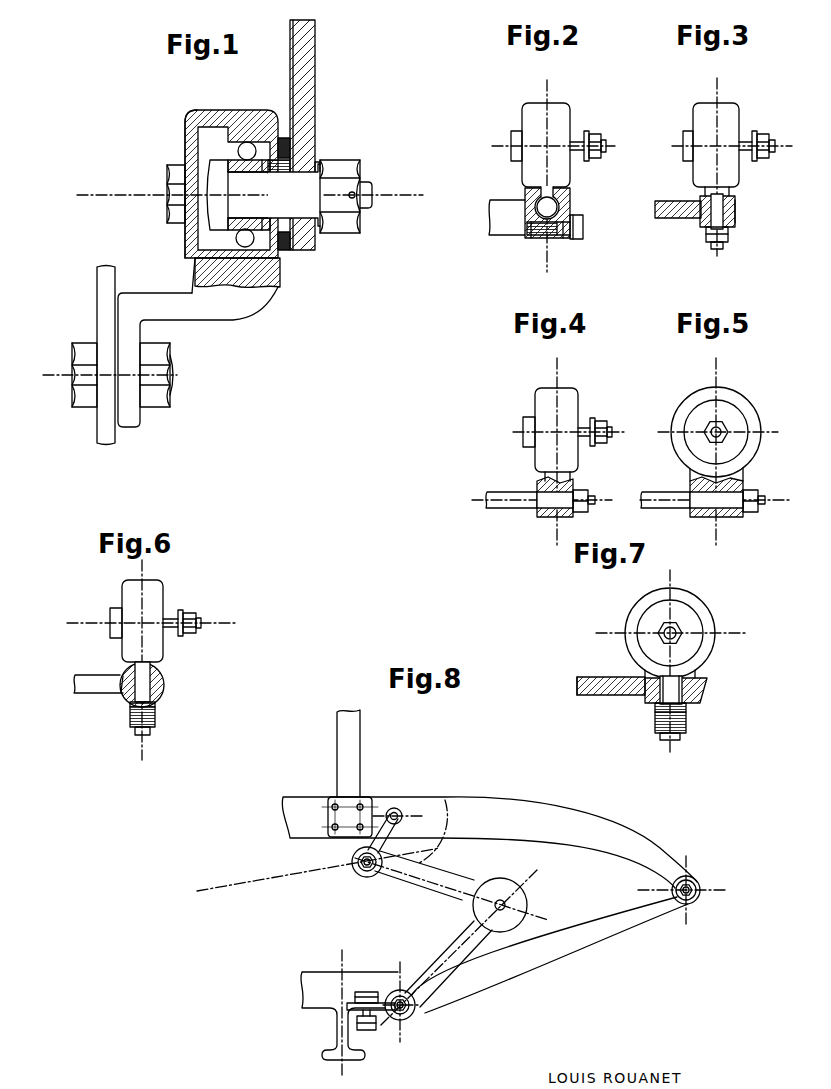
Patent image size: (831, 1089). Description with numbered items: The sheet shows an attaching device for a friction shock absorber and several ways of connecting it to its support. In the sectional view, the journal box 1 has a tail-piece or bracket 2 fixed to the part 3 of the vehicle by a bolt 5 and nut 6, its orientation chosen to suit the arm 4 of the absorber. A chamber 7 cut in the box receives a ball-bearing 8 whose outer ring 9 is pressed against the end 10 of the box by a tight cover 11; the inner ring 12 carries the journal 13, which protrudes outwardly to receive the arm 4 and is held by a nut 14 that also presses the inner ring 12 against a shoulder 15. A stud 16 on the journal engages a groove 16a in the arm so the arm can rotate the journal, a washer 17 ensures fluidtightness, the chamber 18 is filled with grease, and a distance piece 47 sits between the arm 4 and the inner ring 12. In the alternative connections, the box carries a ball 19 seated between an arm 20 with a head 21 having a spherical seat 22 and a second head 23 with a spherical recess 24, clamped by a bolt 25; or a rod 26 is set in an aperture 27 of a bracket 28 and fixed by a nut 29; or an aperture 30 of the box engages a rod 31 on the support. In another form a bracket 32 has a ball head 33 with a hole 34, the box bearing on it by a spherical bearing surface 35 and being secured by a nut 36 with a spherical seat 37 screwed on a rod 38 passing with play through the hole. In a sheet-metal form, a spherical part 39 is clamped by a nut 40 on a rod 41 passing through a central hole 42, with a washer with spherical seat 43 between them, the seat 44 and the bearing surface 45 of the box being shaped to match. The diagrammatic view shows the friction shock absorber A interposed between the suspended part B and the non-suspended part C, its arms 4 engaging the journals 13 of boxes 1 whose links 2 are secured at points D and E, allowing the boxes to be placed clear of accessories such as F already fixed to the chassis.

In FIG. 1, the journal box 1 is at (245, 118).
In FIG. 2, the journal box 1 is at (558, 145).
In FIG. 3, the journal box 1 is at (729, 145).
In FIG. 4, the journal box 1 is at (567, 430).
In FIG. 5, the journal box 1 is at (745, 406).
In FIG. 6, the journal box 1 is at (155, 621).
In FIG. 7, the journal box 1 is at (706, 618).
In FIG. 8, the journal box 1 is at (350, 870).
In FIG. 1, the tail-piece or bracket 2 is at (129, 411).
In FIG. 8, the tail-piece or bracket 2 is at (388, 835).
In FIG. 1, the part of the vehicle 3 is at (107, 430).
In FIG. 1, the arm 4 is at (309, 118).
In FIG. 8, the arm 4 is at (450, 883).
In FIG. 1, the bolt 5 is at (76, 371).
In FIG. 1, the nut 6 is at (156, 352).
In FIG. 1, the chamber 7 is at (258, 262).
In FIG. 1, the ball-bearing 8 is at (236, 239).
In FIG. 1, the outer ring 9 is at (226, 262).
In FIG. 1, the end of the box 10 is at (283, 250).
In FIG. 1, the tight cover 11 is at (201, 137).
In FIG. 1, the inner ring 12 is at (240, 220).
In FIG. 1, the journal 13 is at (300, 195).
In FIG. 8, the journal 13 is at (364, 872).
In FIG. 1, the nut 14 is at (336, 166).
In FIG. 1, the shoulder 15 is at (216, 179).
In FIG. 1, the stud 16 is at (299, 164).
In FIG. 1, the groove 16a is at (312, 170).
In FIG. 1, the washer 17 is at (284, 137).
In FIG. 1, the chamber 18 is at (205, 212).
In FIG. 1, the distance piece 47 is at (271, 220).
In FIG. 2, the ball 19 is at (556, 204).
In FIG. 2, the arm 20 is at (511, 231).
In FIG. 2, the head 21 is at (535, 241).
In FIG. 2, the spherical seat 22 is at (526, 194).
In FIG. 2, the second head 23 is at (561, 241).
In FIG. 2, the spherical recess 24 is at (575, 212).
In FIG. 2, the bolt 25 is at (577, 230).
In FIG. 3, the rod 26 is at (736, 206).
In FIG. 3, the aperture 27 is at (736, 216).
In FIG. 3, the bracket 28 is at (679, 215).
In FIG. 3, the nut 29 is at (712, 236).
In FIG. 4, the aperture 30 is at (560, 511).
In FIG. 5, the aperture 30 is at (748, 515).
In FIG. 4, the rod 31 is at (535, 504).
In FIG. 5, the rod 31 is at (722, 516).
In FIG. 6, the bracket 32 is at (92, 684).
In FIG. 6, the ball head 33 is at (168, 684).
In FIG. 6, the hole 34 is at (125, 692).
In FIG. 6, the spherical bearing surface 35 is at (160, 672).
In FIG. 6, the nut 36 is at (158, 712).
In FIG. 6, the spherical seat 37 is at (160, 700).
In FIG. 6, the rod 38 is at (141, 733).
In FIG. 7, the spherical part 39 is at (708, 693).
In FIG. 7, the nut 40 is at (687, 726).
In FIG. 7, the rod 41 is at (672, 742).
In FIG. 7, the central hole 42 is at (663, 700).
In FIG. 7, the washer with spherical seat 43 is at (690, 714).
In FIG. 7, the seat 44 is at (700, 680).
In FIG. 7, the bearing surface 45 is at (625, 692).
In FIG. 8, the friction shock absorber A is at (520, 906).
In FIG. 8, the suspended part B is at (512, 816).
In FIG. 8, the non-suspended part C is at (333, 1051).
In FIG. 8, the point or axis D is at (396, 808).
In FIG. 8, the point or axis E is at (366, 990).
In FIG. 8, the parts or accessories F is at (345, 750).